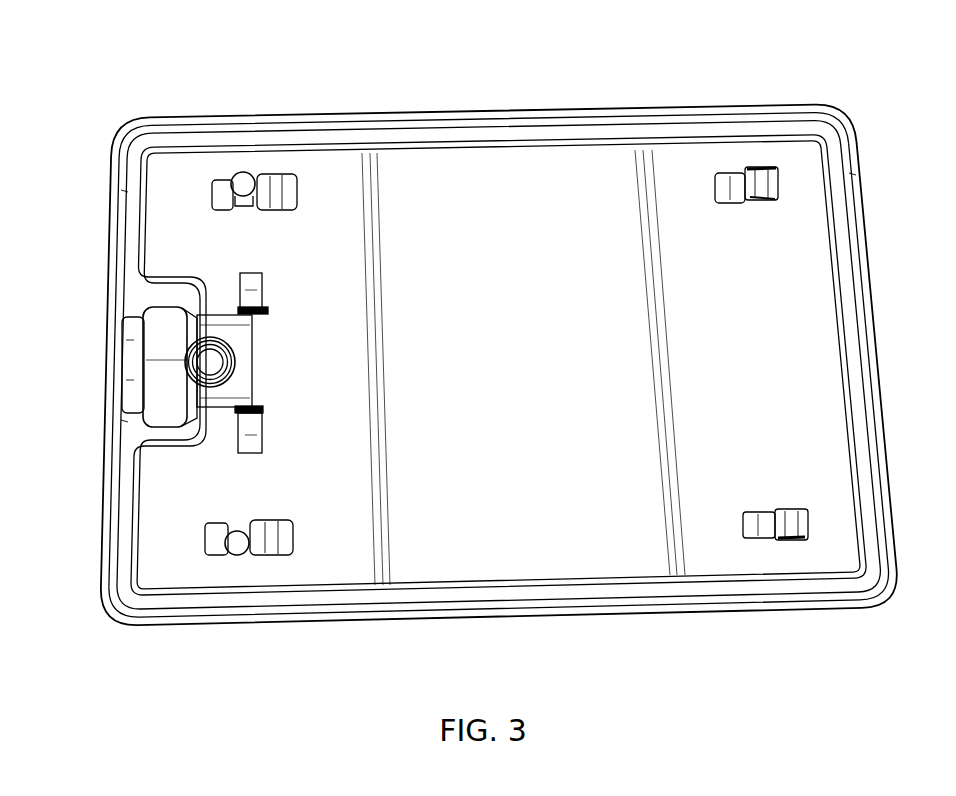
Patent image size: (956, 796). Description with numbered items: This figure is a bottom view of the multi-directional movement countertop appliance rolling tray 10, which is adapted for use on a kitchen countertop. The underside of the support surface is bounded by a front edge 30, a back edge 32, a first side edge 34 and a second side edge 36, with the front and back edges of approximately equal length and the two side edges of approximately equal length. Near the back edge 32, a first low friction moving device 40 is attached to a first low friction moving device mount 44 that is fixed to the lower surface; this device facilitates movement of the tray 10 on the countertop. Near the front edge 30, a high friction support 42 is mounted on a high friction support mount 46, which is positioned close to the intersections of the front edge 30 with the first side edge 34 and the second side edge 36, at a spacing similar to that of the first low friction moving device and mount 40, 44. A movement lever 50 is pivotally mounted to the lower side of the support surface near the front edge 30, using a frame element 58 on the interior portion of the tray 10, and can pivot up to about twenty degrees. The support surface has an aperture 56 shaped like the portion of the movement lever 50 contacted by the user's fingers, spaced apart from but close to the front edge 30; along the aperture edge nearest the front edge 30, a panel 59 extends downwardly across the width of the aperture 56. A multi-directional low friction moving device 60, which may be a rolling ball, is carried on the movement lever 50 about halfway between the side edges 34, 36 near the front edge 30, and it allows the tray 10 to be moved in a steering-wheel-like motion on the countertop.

The multi-directional movement countertop appliance rolling tray 10 is at (147, 40).
The front edge 30 is at (108, 252).
The back edge 32 is at (870, 252).
The first side edge 34 is at (437, 108).
The second side edge 36 is at (561, 617).
The first low friction moving device 40 is at (760, 170).
The high friction support 42 is at (244, 180).
The first low friction moving device mount 44 is at (732, 176).
The high friction support mount 46 is at (275, 178).
The movement lever 50 is at (150, 392).
The aperture 56 is at (150, 437).
The frame element 58 is at (258, 425).
The panel 59 is at (132, 339).
The multi-directional low friction moving device 60 is at (213, 360).